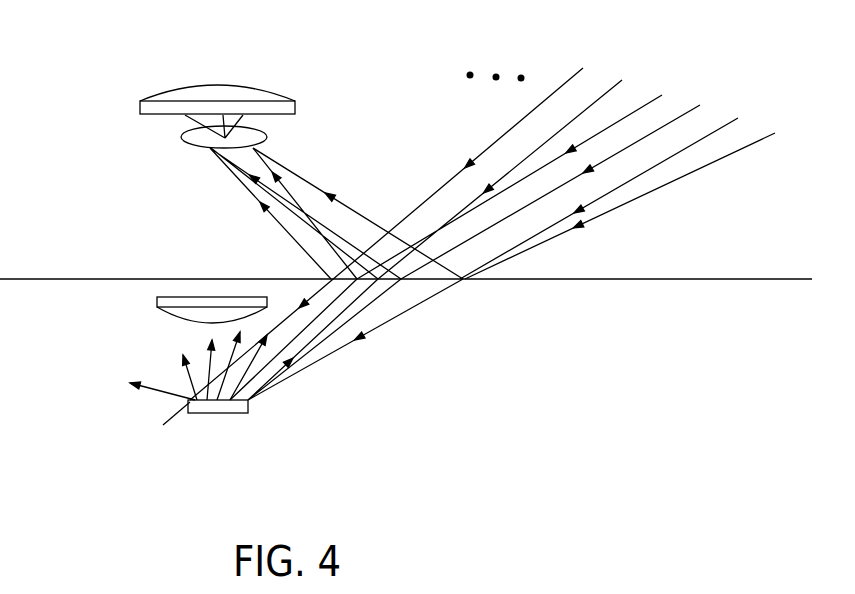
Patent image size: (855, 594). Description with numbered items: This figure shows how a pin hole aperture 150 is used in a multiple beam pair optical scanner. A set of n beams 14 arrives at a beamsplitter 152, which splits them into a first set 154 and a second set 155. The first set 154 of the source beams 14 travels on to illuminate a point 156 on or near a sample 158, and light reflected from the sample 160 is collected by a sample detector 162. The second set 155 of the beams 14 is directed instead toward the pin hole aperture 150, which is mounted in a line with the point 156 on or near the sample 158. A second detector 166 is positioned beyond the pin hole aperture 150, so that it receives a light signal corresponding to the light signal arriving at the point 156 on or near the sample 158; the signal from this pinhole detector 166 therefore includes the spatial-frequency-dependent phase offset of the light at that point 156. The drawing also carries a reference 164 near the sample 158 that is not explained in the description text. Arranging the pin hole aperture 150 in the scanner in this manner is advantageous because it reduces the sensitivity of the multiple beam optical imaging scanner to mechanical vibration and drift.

The beams 14 is at (499, 222).
The pin hole aperture 150 is at (257, 139).
The beamsplitter 152 is at (455, 283).
The first set of beams 154 is at (343, 351).
The second set of beams 155 is at (339, 194).
The point on or near the sample 156 is at (232, 392).
The sample 158 is at (228, 415).
The light reflected from the sample 160 is at (203, 355).
The sample detector 162 is at (148, 301).
The incident direction 164 is at (196, 428).
The second detector 166 is at (102, 77).